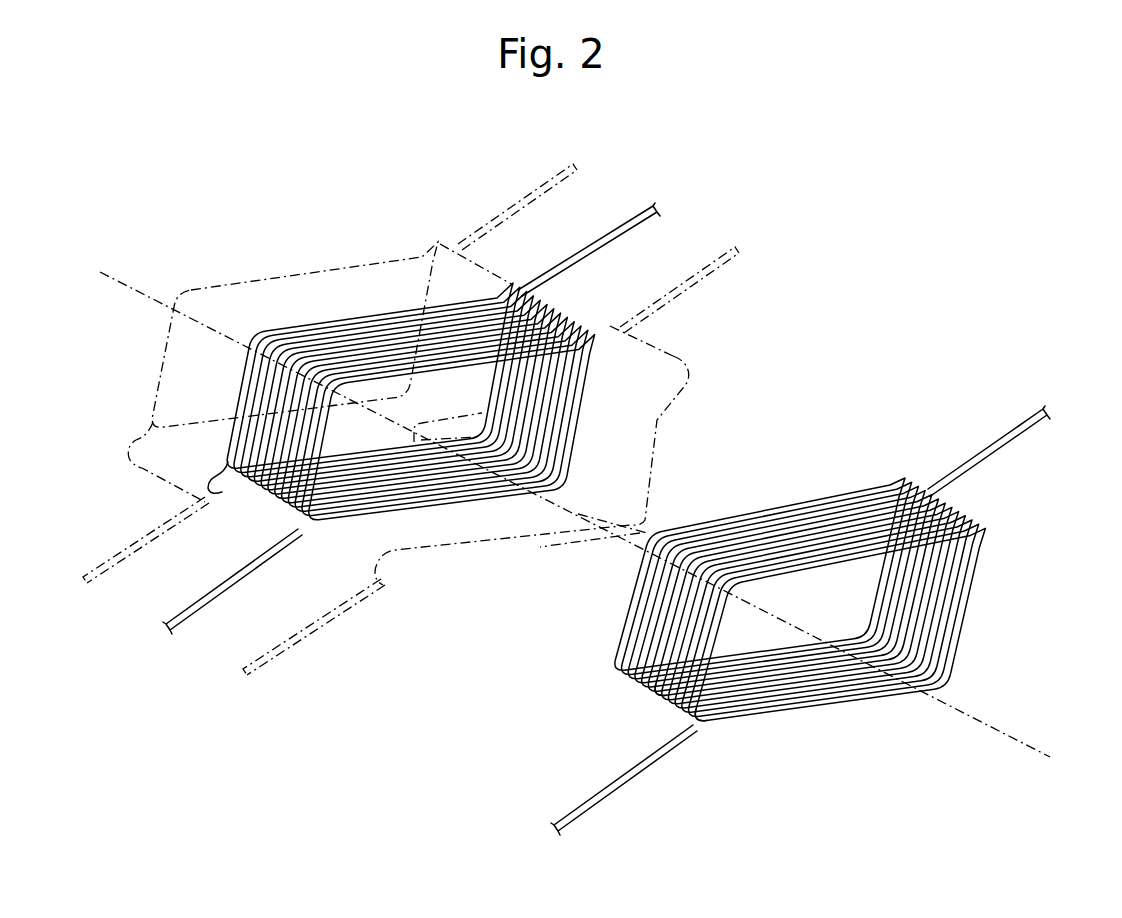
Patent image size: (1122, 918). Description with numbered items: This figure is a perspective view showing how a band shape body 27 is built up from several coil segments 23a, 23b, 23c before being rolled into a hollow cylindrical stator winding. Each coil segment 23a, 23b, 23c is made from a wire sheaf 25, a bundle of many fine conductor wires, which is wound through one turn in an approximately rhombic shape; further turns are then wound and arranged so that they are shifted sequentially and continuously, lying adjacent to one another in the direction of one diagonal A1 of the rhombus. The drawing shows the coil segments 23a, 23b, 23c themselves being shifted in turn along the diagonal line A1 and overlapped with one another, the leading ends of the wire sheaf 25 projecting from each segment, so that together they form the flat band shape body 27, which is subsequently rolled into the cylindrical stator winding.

The band shape body 27 is at (452, 193).
The coil segment 23a is at (608, 300).
The coil segment 23b is at (683, 348).
The coil segment 23c is at (523, 250).
The wire sheaf 25 is at (597, 687).
The diagonal A1 is at (990, 724).